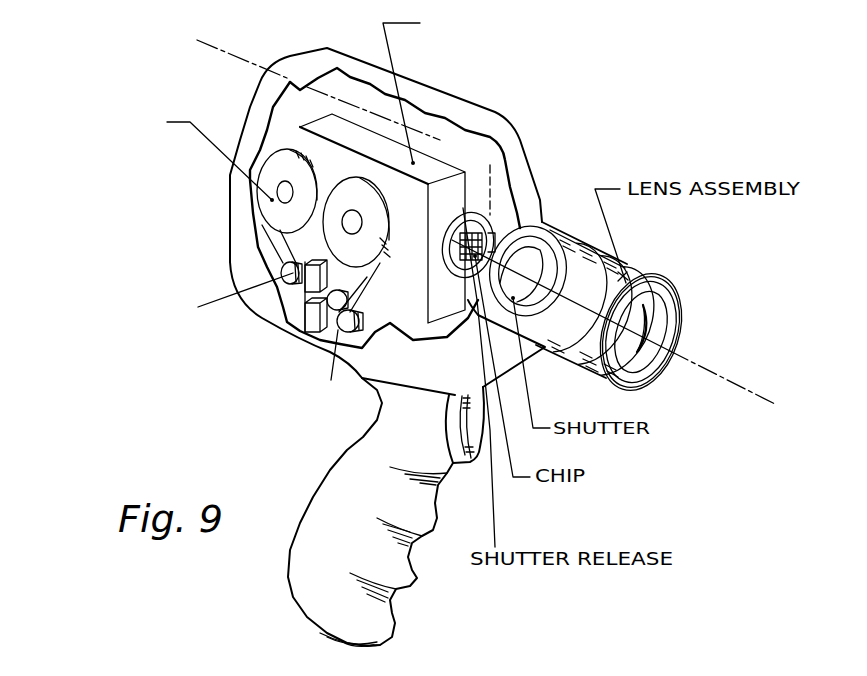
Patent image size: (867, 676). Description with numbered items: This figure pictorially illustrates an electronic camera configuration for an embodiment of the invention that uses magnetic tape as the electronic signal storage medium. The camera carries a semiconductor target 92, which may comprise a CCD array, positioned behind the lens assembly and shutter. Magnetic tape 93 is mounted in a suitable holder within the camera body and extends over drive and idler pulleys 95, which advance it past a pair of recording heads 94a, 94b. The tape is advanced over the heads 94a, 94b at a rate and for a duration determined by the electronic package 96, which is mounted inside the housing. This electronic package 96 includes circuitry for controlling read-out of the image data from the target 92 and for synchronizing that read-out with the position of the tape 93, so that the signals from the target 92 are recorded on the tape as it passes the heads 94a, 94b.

The semiconductor target 92 is at (512, 203).
The magnetic tape 93 is at (275, 165).
The recording head 94a is at (310, 280).
The recording head 94b is at (310, 318).
The drive and idler pulleys 95 is at (287, 273).
The electronic package 96 is at (442, 172).